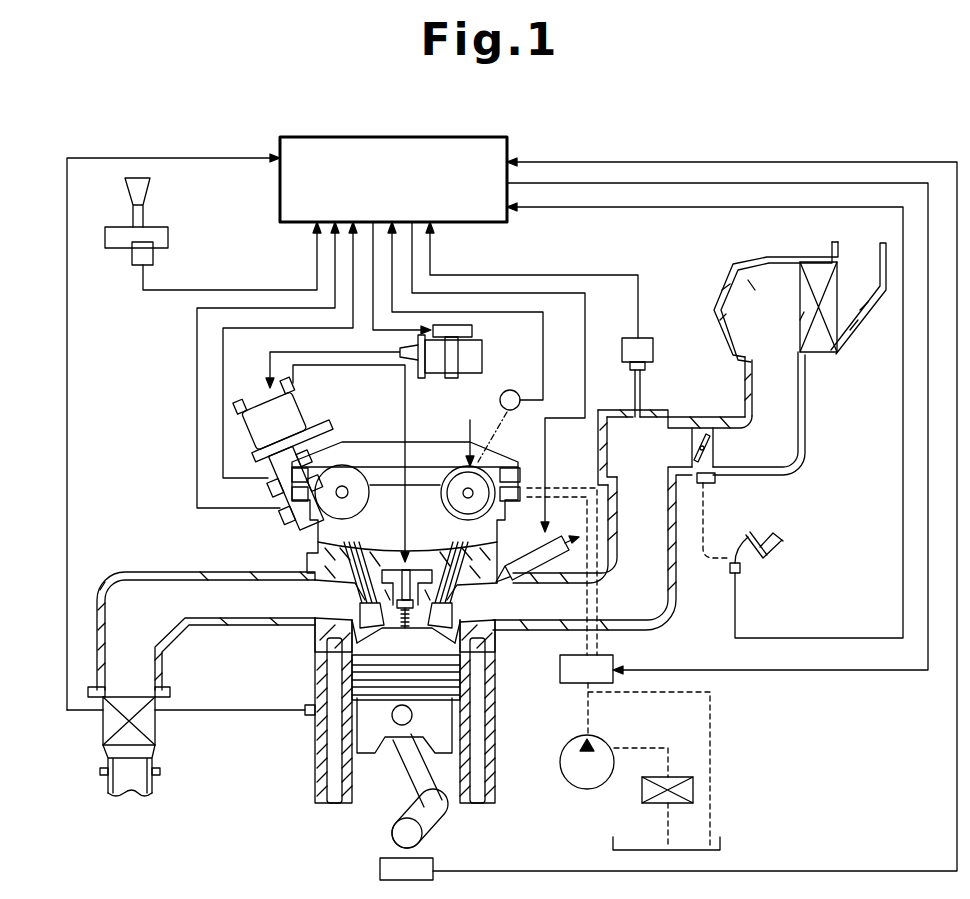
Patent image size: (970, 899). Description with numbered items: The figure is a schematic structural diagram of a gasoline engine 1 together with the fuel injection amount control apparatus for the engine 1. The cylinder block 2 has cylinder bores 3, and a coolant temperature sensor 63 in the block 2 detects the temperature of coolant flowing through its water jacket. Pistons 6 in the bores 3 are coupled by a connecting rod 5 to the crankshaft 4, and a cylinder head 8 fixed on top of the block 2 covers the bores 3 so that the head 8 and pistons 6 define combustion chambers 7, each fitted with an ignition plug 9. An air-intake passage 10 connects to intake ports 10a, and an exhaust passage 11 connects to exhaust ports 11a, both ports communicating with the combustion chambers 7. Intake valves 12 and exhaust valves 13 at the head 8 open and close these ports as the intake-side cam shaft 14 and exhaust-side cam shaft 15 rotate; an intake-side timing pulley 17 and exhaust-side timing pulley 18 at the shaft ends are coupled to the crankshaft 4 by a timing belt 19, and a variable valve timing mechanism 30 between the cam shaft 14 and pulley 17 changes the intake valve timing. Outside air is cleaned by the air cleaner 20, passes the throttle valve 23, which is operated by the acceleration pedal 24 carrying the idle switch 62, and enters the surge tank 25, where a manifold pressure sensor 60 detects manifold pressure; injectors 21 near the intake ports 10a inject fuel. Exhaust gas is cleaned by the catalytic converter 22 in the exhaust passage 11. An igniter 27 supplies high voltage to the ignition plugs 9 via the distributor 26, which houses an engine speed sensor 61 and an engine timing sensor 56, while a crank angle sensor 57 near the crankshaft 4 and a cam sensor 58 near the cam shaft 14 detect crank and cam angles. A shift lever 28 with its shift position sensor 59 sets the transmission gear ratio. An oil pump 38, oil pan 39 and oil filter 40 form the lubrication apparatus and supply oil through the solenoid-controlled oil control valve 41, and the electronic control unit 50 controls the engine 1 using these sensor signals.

The gasoline engine 1 is at (511, 718).
The cylinder block 2 is at (502, 800).
The cylinder bores 3 is at (353, 797).
The crankshaft 4 is at (422, 835).
The connecting rod 5 is at (410, 778).
The pistons 6 is at (385, 740).
The combustion chambers 7 is at (413, 621).
The cylinder head 8 is at (498, 543).
The ignition plugs 9 is at (423, 531).
The air-intake passage 10 is at (667, 585).
The intake ports 10a is at (549, 602).
The exhaust passage 11 is at (218, 624).
The exhaust ports 11a is at (282, 605).
The intake valves 12 is at (452, 609).
The exhaust valves 13 is at (308, 633).
The intake-side cam shaft 14 is at (523, 476).
The exhaust-side cam shaft 15 is at (359, 502).
The intake-side timing pulley 17 is at (519, 429).
The exhaust-side timing pulley 18 is at (347, 465).
The timing belt 19 is at (418, 458).
The air cleaner 20 is at (799, 314).
The injectors 21 is at (560, 532).
The catalytic converter 22 is at (157, 722).
The throttle valve 23 is at (712, 443).
The acceleration pedal 24 is at (747, 532).
The surge tank 25 is at (609, 452).
The distributor 26 is at (315, 391).
The igniter 27 is at (483, 343).
The shift lever 28 is at (128, 195).
The variable valve timing mechanism 30 is at (482, 412).
The oil pump 38 is at (567, 768).
The oil pan 39 is at (722, 837).
The oil filter 40 is at (640, 799).
The oil control valve 41 is at (560, 672).
The electronic control unit 50 is at (280, 203).
The engine timing sensor 56 is at (264, 490).
The crank angle sensor 57 is at (380, 869).
The cam sensor 58 is at (507, 390).
The shift position sensor 59 is at (134, 268).
The manifold pressure sensor 60 is at (650, 341).
The engine speed sensor 61 is at (275, 520).
The idle switch 62 is at (742, 570).
The coolant temperature sensor 63 is at (303, 721).